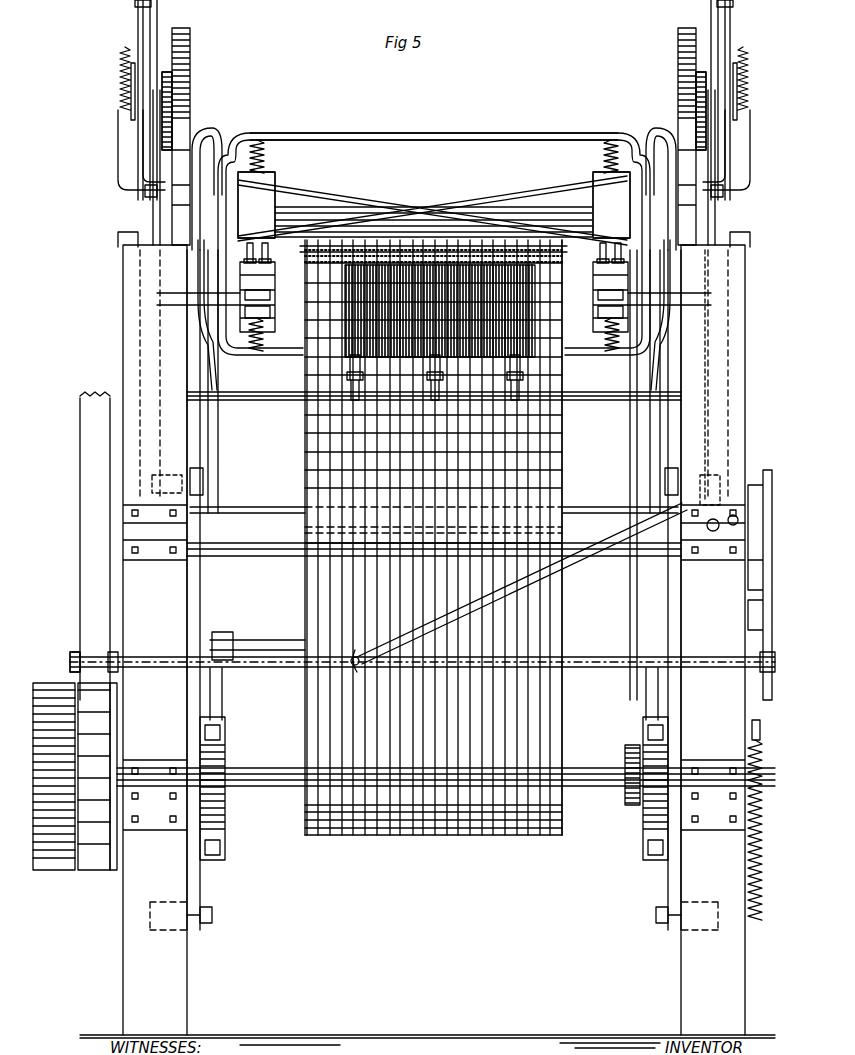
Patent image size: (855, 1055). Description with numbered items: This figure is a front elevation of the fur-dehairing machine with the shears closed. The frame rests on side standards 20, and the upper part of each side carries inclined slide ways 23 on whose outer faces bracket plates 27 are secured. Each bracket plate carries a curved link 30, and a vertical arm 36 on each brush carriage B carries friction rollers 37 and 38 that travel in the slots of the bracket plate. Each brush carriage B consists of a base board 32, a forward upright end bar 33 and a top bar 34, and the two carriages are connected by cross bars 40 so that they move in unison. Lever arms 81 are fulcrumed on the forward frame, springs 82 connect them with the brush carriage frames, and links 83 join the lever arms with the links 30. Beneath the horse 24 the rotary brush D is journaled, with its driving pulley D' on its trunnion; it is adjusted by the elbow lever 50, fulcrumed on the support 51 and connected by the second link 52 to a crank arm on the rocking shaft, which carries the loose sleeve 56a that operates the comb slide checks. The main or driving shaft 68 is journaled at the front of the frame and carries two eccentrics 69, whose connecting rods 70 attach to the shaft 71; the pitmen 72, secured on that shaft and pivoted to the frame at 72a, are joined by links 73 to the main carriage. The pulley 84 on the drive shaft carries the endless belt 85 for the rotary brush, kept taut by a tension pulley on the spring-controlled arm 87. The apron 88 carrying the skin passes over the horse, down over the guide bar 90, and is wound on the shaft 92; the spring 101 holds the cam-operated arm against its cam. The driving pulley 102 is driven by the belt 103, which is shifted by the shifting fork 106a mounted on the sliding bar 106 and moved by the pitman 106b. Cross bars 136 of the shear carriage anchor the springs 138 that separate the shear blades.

The standard 20 is at (434, 633).
The slide way 23 is at (192, 50).
The horse 24 is at (434, 287).
The bracket plate 27 is at (700, 70).
The link 30 is at (165, 178).
The base board 32 is at (275, 319).
The forward upright end bar 33 is at (434, 289).
The top bar 34 is at (597, 197).
The vertical arm 36 is at (153, 213).
The friction roller 37 is at (145, 191).
The friction roller 38 is at (178, 97).
The cross bar 40 is at (452, 208).
The lever 50 is at (205, 340).
The support 51 is at (187, 322).
The second link 52 is at (218, 436).
The sleeve 56a is at (590, 507).
The main or driving shaft 68 is at (278, 768).
The eccentric 69 is at (225, 810).
The connecting rod 70 is at (222, 690).
The shaft 71 is at (257, 640).
The pitman 72 is at (200, 567).
The pitman pivot 72a is at (212, 916).
The link 73 is at (168, 441).
The lever arm 81 is at (138, 22).
The spring 82 is at (485, 378).
The link 83 is at (157, 22).
The pulley 84 is at (625, 761).
The endless belt 85 is at (632, 615).
The spring-controlled arm 87 is at (360, 385).
The apron 88 is at (433, 537).
The guide bar 90 is at (262, 400).
The shaft 92 is at (272, 536).
The spring 101 is at (774, 695).
The driving pulley 102 is at (72, 764).
The belt 103 is at (95, 631).
The sliding bar 106 is at (422, 655).
The shifting fork 106a is at (70, 661).
The pitman 106b is at (590, 552).
The cross bar 136 is at (275, 373).
The spring 138 is at (265, 158).
The brush carriage B is at (434, 205).
The rotary brush D is at (212, 178).
The driving pulley D' is at (707, 293).